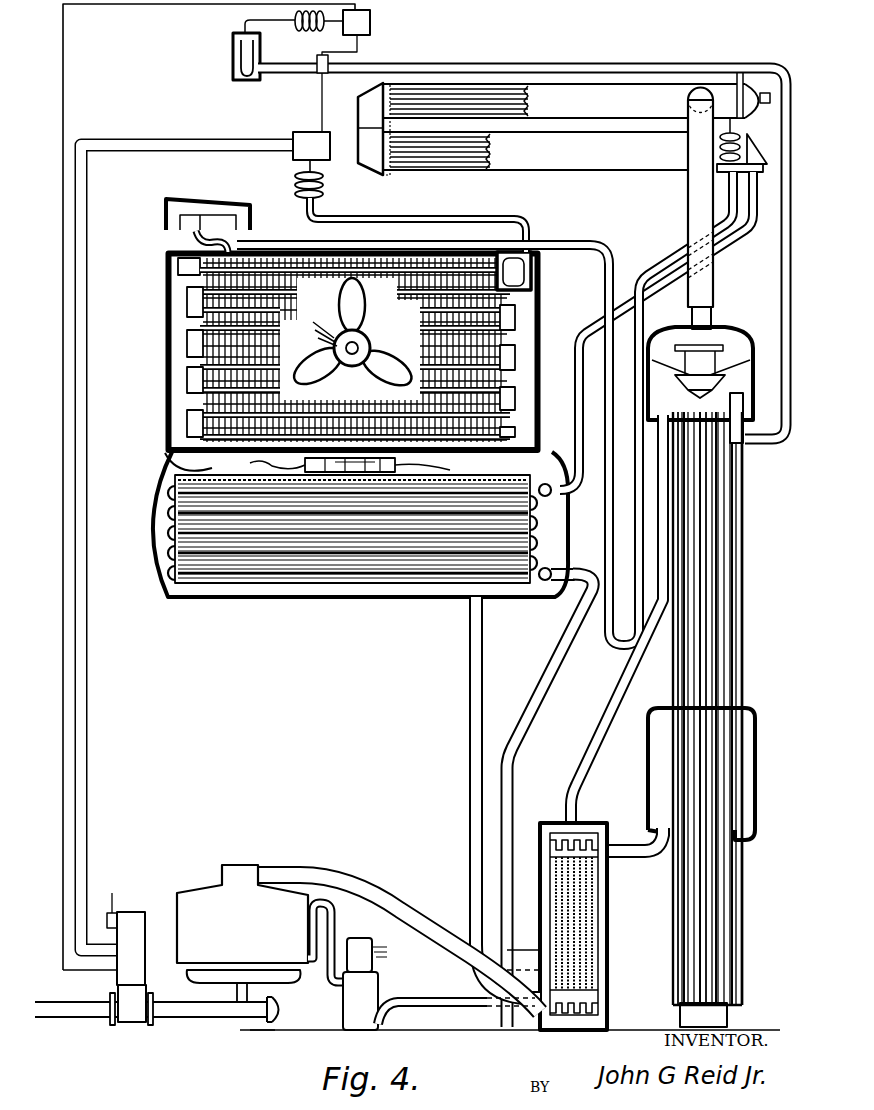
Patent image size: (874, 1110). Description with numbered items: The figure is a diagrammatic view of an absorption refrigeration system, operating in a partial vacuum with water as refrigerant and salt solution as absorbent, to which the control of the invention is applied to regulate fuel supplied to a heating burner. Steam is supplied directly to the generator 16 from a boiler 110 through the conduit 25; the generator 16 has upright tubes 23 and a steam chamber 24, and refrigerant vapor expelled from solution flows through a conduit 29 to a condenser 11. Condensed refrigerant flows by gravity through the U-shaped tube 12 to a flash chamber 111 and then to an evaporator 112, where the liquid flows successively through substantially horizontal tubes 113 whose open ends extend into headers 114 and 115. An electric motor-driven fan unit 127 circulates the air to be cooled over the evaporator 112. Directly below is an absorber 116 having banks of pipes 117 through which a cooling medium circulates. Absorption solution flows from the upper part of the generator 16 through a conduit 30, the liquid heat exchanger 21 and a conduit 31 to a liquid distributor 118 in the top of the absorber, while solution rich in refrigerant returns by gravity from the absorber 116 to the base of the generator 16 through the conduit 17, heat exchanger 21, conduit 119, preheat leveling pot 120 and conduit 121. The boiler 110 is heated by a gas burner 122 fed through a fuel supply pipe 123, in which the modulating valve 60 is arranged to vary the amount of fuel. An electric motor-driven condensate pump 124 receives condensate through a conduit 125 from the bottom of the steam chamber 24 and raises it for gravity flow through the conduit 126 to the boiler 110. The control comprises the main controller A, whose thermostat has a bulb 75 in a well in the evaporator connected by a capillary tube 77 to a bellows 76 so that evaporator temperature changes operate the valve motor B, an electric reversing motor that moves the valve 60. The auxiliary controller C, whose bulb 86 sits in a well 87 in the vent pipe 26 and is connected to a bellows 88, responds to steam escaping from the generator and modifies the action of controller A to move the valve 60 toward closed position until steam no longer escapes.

The condenser 11 is at (600, 163).
The U-shaped tube 12 is at (663, 252).
The generator 16 is at (666, 883).
The conduit 17 is at (469, 723).
The liquid heat exchanger 21 is at (540, 892).
The upright tubes 23 is at (705, 903).
The steam chamber 24 is at (676, 931).
The conduit 25 is at (378, 900).
The vent pipe 26 is at (781, 292).
The conduit 29 is at (695, 204).
The conduit 30 is at (633, 690).
The conduit 31 is at (528, 738).
The modulating valve 60 is at (131, 1022).
The bulb 75 is at (533, 279).
The bellows 76 is at (324, 190).
The capillary tube 77 is at (407, 225).
The bulb 86 is at (233, 55).
The well 87 is at (235, 70).
The bellows 88 is at (300, 31).
The boiler 110 is at (191, 896).
The flash chamber 111 is at (238, 202).
The evaporator 112 is at (159, 357).
The horizontal tubes 113 is at (260, 292).
The header 114 is at (183, 402).
The header 115 is at (520, 339).
The absorber 116 is at (318, 596).
The banks of pipes 117 is at (398, 560).
The liquid distributor 118 is at (252, 464).
The conduit 119 is at (622, 838).
The preheat leveling pot 120 is at (648, 786).
The conduit 121 is at (742, 882).
The gas burner 122 is at (290, 982).
The fuel supply pipe 123 is at (80, 1013).
The condensate pump 124 is at (370, 986).
The conduit 125 is at (478, 1000).
The conduit 126 is at (336, 942).
The fan unit 127 is at (386, 336).
The main controller A is at (295, 128).
The electric reversing motor B is at (129, 912).
The auxiliary controller C is at (381, 14).